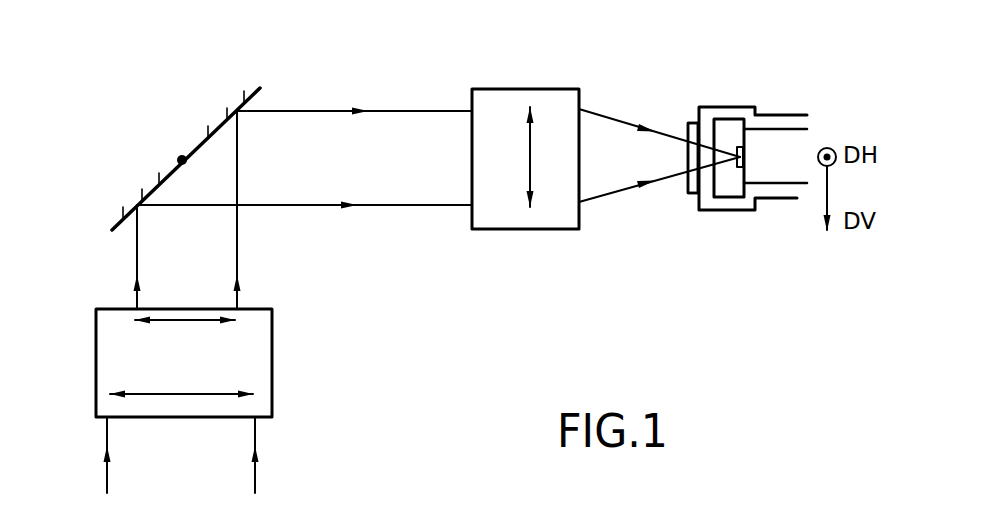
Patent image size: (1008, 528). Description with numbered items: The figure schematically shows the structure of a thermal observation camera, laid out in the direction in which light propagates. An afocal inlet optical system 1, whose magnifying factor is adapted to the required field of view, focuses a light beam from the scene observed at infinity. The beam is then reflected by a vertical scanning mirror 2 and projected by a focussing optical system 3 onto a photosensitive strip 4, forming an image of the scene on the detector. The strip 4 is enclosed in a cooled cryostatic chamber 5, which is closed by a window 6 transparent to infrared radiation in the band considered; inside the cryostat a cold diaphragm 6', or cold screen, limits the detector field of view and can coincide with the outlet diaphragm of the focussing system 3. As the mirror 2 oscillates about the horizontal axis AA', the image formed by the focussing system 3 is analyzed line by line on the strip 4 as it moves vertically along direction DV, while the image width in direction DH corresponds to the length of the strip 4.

The afocal inlet optical system 1 is at (272, 310).
The vertical scanning mirror 2 is at (111, 228).
The focussing optical system 3 is at (471, 88).
The photosensitive strip 4 is at (743, 157).
The cooled cryostatic chamber 5 is at (737, 210).
The window 6 is at (679, 138).
The cold diaphragm 6' is at (689, 184).